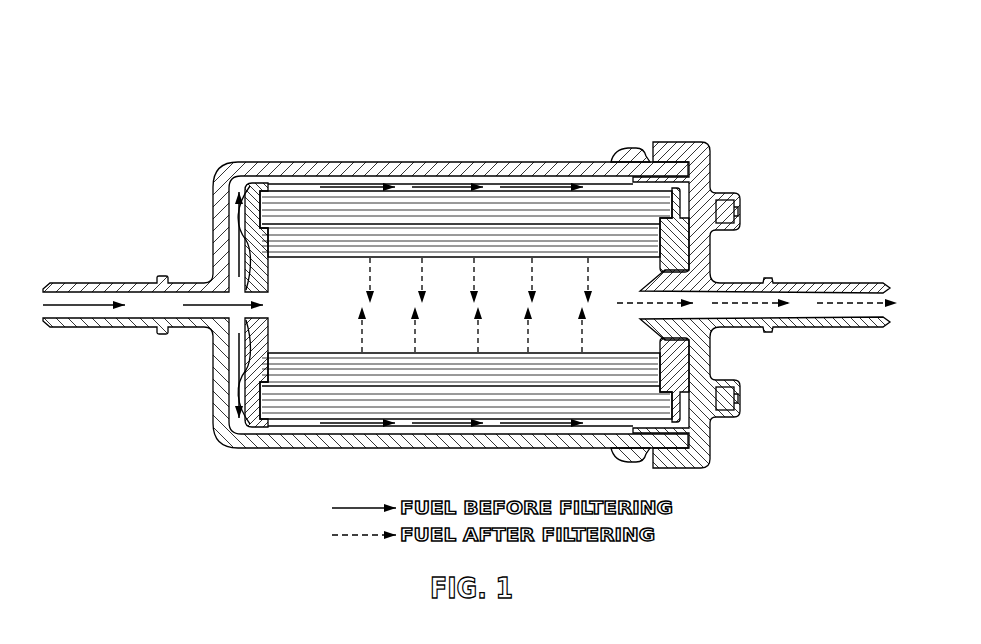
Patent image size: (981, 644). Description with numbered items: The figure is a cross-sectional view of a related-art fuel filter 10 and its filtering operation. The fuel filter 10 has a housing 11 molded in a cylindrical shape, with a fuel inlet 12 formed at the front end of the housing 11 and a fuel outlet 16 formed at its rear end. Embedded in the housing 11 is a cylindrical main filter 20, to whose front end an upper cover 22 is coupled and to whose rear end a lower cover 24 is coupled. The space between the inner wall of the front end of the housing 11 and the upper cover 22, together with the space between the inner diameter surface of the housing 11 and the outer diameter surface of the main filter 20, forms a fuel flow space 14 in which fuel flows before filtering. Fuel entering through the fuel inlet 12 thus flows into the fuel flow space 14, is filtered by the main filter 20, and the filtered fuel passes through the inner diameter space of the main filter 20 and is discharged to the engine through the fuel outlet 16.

The fuel filter 10 is at (470, 250).
The housing 11 is at (487, 162).
The fuel inlet 12 is at (145, 303).
The fuel flow space 14 is at (466, 260).
The fuel outlet 16 is at (808, 300).
The main filter 20 is at (312, 200).
The upper cover 22 is at (260, 183).
The lower cover 24 is at (690, 243).